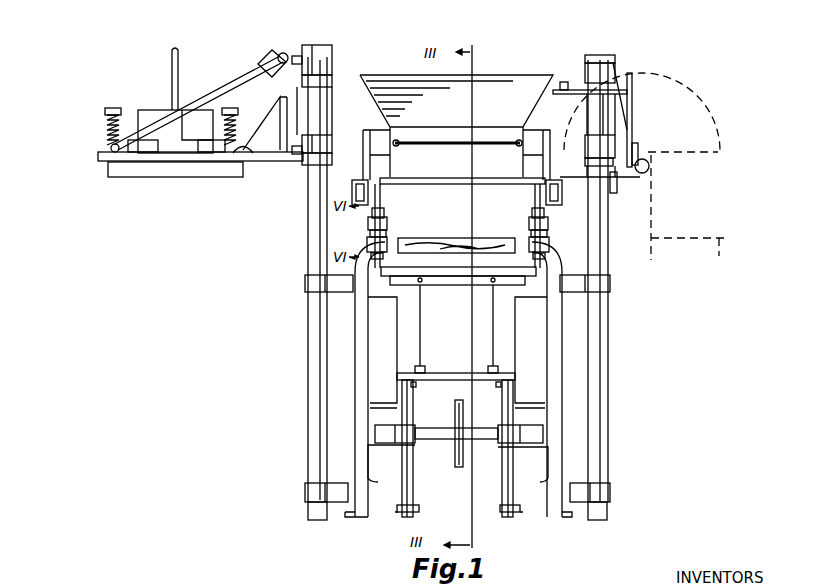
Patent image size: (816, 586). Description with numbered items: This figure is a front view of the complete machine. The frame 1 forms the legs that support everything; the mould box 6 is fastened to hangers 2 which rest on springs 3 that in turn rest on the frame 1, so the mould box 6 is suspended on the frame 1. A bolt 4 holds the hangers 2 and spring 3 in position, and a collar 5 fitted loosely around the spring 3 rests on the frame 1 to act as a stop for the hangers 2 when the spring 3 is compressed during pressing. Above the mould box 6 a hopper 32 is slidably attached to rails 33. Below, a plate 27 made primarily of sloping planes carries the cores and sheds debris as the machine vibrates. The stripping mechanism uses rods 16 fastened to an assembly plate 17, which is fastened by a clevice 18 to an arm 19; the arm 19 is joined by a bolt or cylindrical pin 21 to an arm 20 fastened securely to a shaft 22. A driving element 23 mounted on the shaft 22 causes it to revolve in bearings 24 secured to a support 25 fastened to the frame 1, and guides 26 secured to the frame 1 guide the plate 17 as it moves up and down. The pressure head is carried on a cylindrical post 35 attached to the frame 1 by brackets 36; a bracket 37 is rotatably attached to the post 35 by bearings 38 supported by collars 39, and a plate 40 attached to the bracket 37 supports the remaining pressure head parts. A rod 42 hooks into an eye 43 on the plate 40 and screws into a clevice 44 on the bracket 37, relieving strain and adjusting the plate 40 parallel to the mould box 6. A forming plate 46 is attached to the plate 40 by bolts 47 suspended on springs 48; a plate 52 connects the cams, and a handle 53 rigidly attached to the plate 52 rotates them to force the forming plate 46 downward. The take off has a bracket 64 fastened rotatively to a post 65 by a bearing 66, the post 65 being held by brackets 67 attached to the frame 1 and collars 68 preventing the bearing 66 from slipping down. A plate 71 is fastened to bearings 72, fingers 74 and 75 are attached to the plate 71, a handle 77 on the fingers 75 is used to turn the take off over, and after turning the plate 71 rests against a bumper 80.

The frame 1 is at (355, 358).
The hangers 2 is at (368, 224).
The springs 3 is at (386, 234).
The bolt 4 is at (380, 208).
The collar 5 is at (367, 239).
The mould box 6 is at (458, 184).
The rods 16 is at (493, 322).
The assembly plate 17 is at (450, 373).
The clevice 18 is at (413, 387).
The arm 19 is at (402, 474).
The arm 20 is at (417, 496).
The bolt or cylindrical pin 21 is at (398, 512).
The shaft 22 is at (455, 445).
The driving element 23 is at (462, 470).
The bearings 24 is at (375, 432).
The support 25 is at (368, 458).
The guides 26 is at (368, 340).
The plate 27 is at (462, 285).
The hopper 32 is at (400, 75).
The rails 33 is at (352, 193).
The cylindrical post 35 is at (308, 310).
The brackets 36 is at (305, 280).
The bracket 37 is at (262, 118).
The bearings 38 is at (332, 60).
The collars 39 is at (332, 80).
The plate 40 is at (98, 160).
The rod 42 is at (233, 76).
The eye 43 is at (111, 147).
The clevice 44 is at (280, 56).
The forming plate 46 is at (108, 177).
The bolts 47 is at (108, 108).
The springs 48 is at (106, 118).
The plate 52 is at (140, 110).
The handle 53 is at (172, 52).
The bracket 64 is at (615, 62).
The post 65 is at (608, 322).
The bearing 66 is at (590, 63).
The brackets 67 is at (610, 283).
The collars 68 is at (565, 82).
The plate 71 is at (632, 108).
The bearings 72 is at (645, 158).
The fingers 74 is at (615, 176).
The fingers 75 is at (570, 90).
The handle 77 is at (556, 90).
The bumper 80 is at (466, 240).